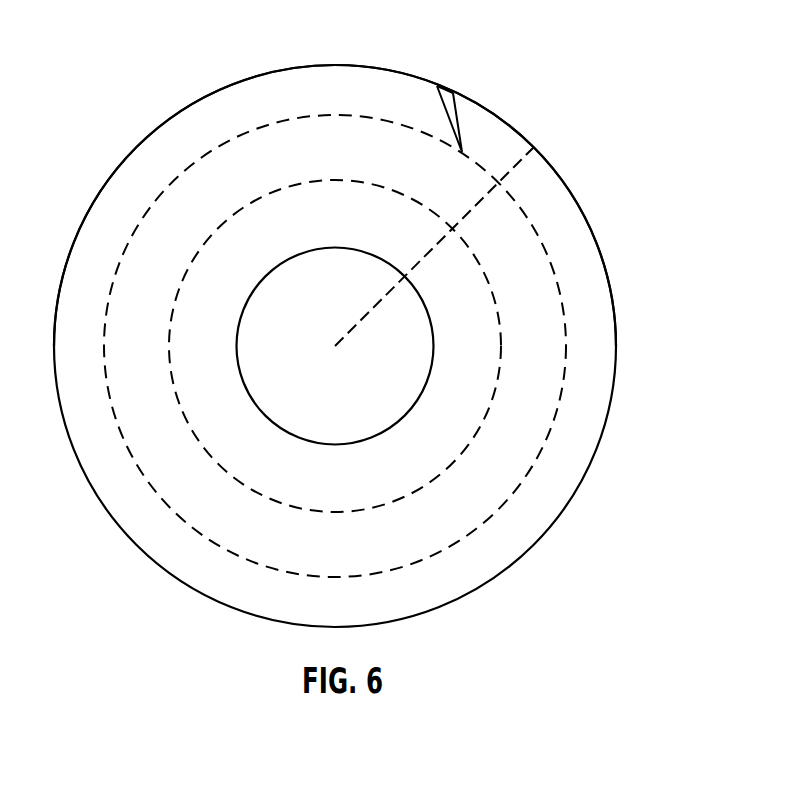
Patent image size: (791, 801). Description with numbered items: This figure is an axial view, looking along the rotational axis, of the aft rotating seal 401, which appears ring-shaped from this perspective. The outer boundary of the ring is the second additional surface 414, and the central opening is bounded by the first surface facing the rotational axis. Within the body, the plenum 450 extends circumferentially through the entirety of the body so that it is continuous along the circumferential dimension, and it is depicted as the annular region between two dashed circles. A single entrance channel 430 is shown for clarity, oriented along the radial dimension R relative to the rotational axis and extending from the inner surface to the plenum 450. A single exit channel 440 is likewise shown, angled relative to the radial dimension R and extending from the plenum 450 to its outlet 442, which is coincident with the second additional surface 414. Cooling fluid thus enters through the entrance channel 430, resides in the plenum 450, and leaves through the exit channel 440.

The aft rotating seal 401 is at (162, 125).
The second additional surface 414 is at (402, 72).
The outlet 442 is at (445, 92).
The exit channel 440 is at (460, 142).
The plenum 450 is at (545, 323).
The entrance channel 430 is at (435, 253).
The radial dimension R is at (518, 164).